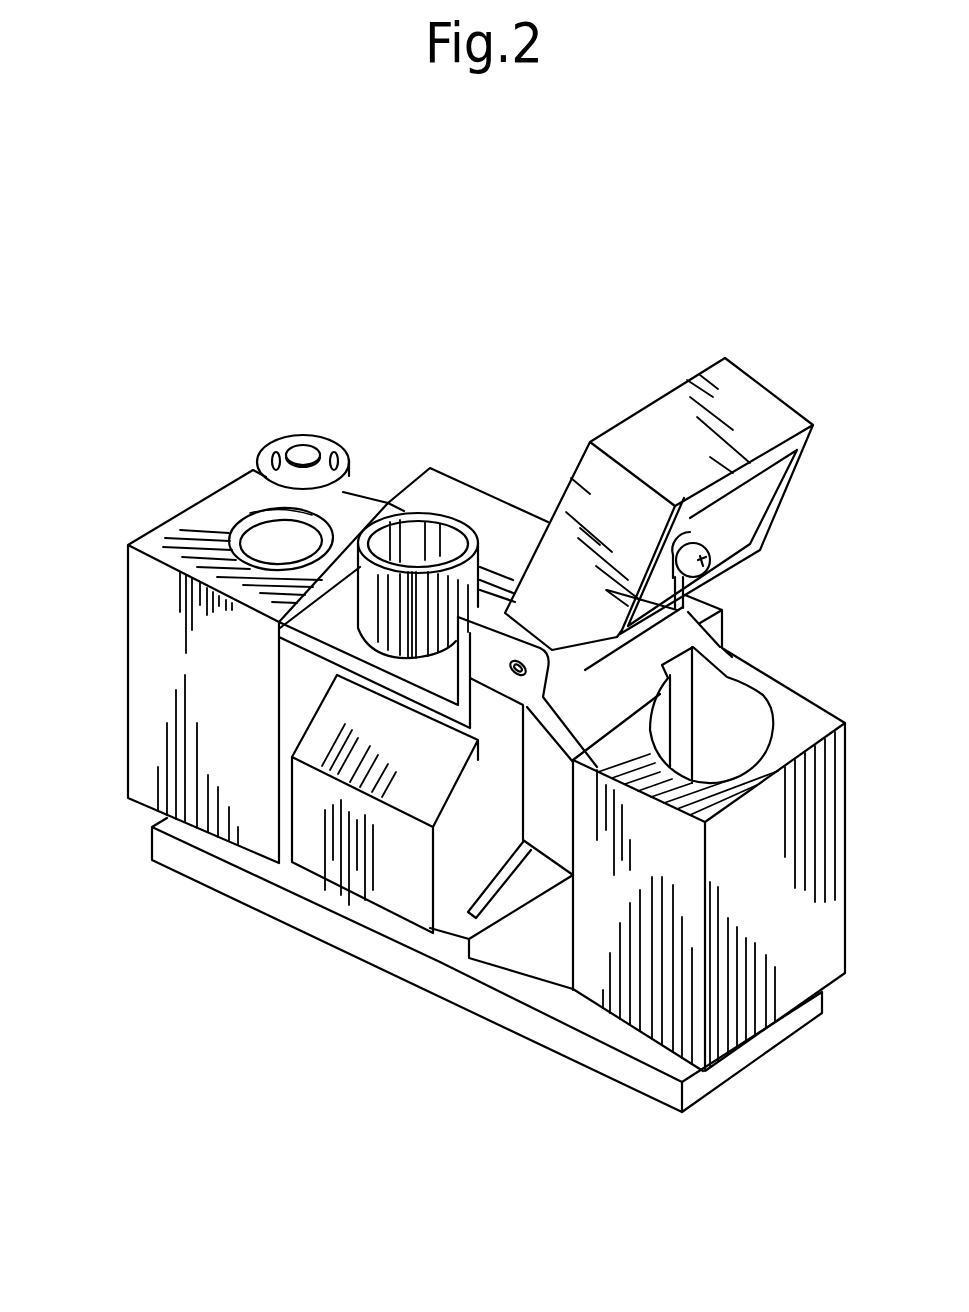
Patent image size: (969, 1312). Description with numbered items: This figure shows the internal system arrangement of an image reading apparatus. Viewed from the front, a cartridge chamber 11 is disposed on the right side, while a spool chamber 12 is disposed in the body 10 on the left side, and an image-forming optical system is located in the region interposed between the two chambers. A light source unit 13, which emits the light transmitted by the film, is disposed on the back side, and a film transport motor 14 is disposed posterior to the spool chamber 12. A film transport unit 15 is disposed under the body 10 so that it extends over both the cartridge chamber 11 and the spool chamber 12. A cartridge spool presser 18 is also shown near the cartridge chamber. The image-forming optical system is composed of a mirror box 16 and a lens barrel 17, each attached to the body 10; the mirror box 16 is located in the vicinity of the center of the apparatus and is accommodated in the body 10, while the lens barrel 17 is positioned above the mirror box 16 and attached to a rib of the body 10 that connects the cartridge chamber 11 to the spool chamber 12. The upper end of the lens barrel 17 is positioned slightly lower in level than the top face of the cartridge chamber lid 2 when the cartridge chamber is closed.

The cartridge chamber lid 2 is at (770, 405).
The body 10 is at (140, 622).
The cartridge chamber 11 is at (743, 730).
The spool chamber 12 is at (238, 490).
The light source unit 13 is at (498, 520).
The film transport motor 14 is at (304, 438).
The film transport unit 15 is at (513, 1013).
The mirror box 16 is at (373, 867).
The lens barrel 17 is at (433, 527).
The cartridge spool presser 18 is at (713, 567).